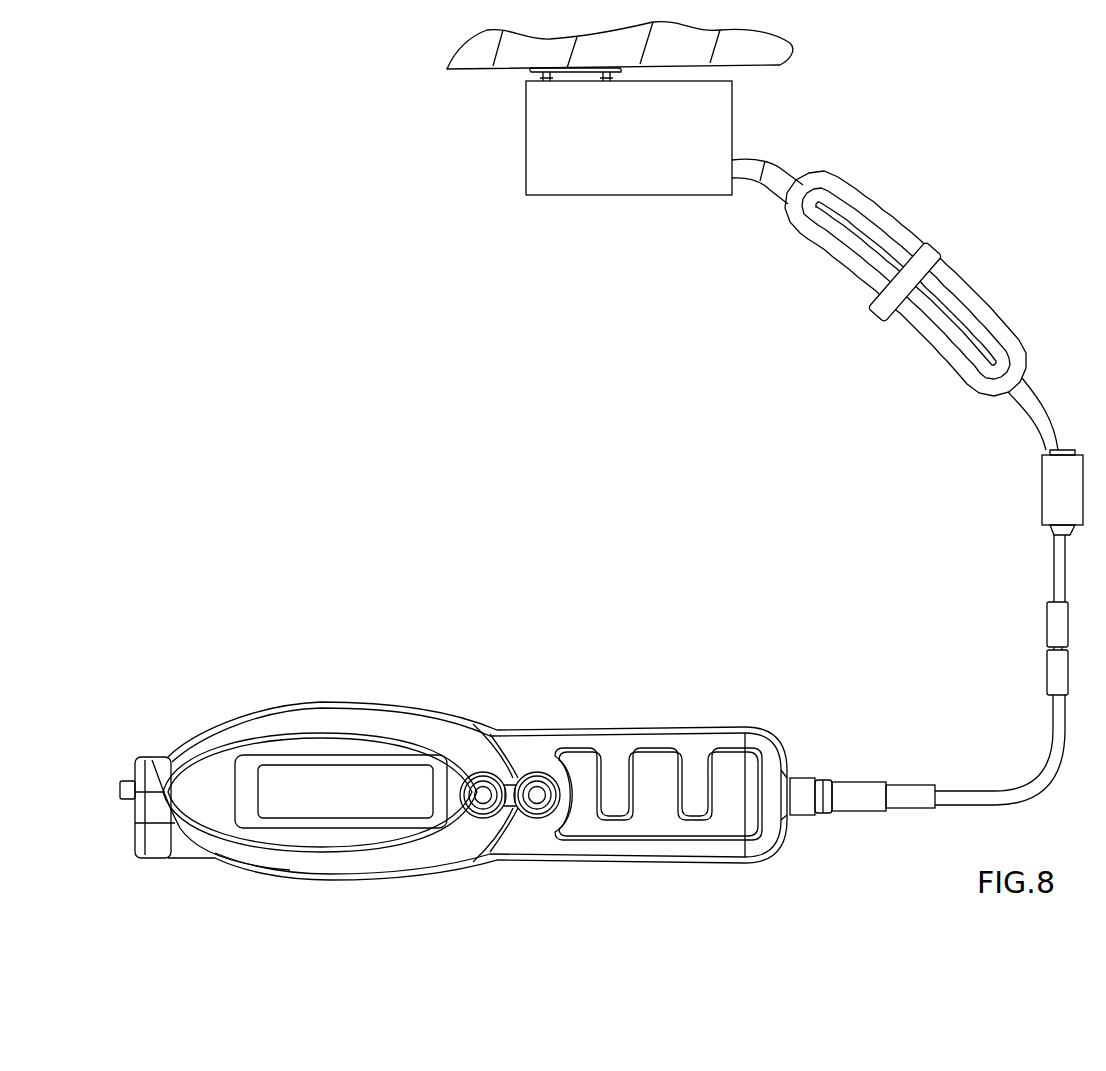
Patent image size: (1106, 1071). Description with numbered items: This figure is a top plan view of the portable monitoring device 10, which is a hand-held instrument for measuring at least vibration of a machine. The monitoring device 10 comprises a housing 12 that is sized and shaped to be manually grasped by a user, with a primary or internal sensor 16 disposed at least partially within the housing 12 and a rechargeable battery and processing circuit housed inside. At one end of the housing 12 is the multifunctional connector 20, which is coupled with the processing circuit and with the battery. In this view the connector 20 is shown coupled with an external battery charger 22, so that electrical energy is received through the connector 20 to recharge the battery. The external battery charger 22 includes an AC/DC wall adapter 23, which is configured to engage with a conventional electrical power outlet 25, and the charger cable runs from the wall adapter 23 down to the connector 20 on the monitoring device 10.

The portable monitoring device 10 is at (439, 709).
The housing 12 is at (605, 722).
The primary sensor 16 is at (114, 775).
The connector 20 is at (806, 770).
The external battery charger 22 is at (737, 338).
The AC/DC wall adapter 23 is at (599, 192).
The electrical power outlet 25 is at (573, 75).